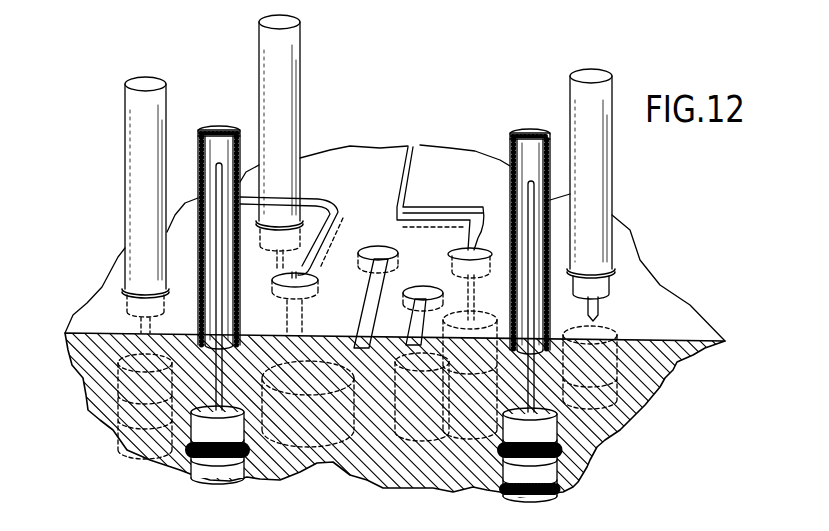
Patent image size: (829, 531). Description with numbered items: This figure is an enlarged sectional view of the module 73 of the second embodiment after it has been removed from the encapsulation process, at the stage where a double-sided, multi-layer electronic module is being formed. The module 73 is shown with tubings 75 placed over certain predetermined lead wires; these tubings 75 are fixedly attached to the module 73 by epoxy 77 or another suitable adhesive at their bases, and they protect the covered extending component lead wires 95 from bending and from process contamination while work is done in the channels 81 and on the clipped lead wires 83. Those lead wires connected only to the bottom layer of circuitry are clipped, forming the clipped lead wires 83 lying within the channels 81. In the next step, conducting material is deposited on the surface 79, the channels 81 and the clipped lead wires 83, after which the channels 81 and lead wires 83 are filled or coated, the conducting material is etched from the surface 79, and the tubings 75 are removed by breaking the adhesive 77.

The module 73 is at (641, 422).
The tubings 75 is at (212, 131).
The epoxy 77 is at (172, 293).
The surface 79 is at (355, 152).
The channels 81 is at (310, 270).
The clipped lead wires 83 is at (455, 253).
The extending component lead wires 95 is at (216, 178).